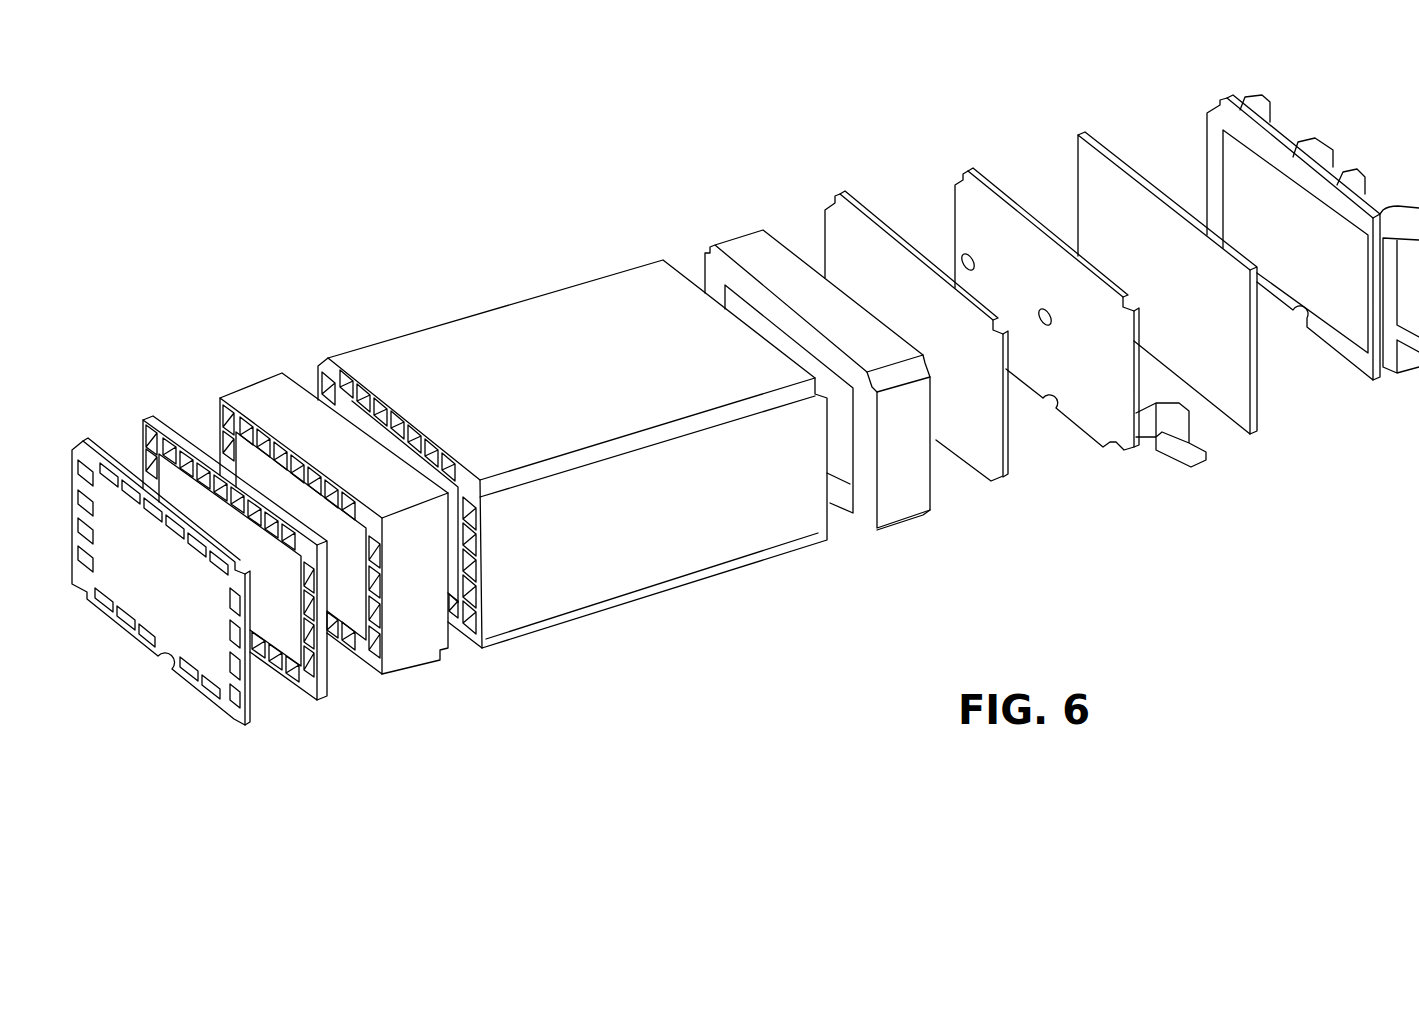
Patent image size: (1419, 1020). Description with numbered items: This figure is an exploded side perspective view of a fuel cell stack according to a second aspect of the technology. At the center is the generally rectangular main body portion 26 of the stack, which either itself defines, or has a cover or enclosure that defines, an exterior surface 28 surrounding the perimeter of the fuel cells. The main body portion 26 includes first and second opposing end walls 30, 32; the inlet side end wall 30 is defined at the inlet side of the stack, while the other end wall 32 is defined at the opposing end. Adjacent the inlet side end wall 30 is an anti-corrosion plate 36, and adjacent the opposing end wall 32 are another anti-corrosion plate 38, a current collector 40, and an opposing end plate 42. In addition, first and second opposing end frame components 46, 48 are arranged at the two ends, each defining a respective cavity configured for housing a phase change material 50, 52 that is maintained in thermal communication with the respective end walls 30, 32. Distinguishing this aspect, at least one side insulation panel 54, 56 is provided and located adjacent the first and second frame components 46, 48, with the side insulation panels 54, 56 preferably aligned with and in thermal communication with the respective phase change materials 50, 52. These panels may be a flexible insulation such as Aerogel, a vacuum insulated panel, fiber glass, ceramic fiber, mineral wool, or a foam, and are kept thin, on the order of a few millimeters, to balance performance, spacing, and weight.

The main body portion 26 is at (572, 452).
The exterior surface 28 is at (597, 393).
The inlet side end wall 30 is at (546, 452).
The end wall 32 is at (546, 413).
The anti-corrosion plate 36 is at (233, 715).
The anti-corrosion plate 38 is at (1000, 442).
The current collector 40 is at (1103, 447).
The opposing end plate 42 is at (1320, 145).
The first end frame component 46 is at (330, 534).
The second end frame component 48 is at (895, 510).
The phase change material 50 is at (253, 462).
The phase change material 52 is at (842, 480).
The side insulation panel 54 is at (303, 690).
The side insulation panel 56 is at (1127, 160).